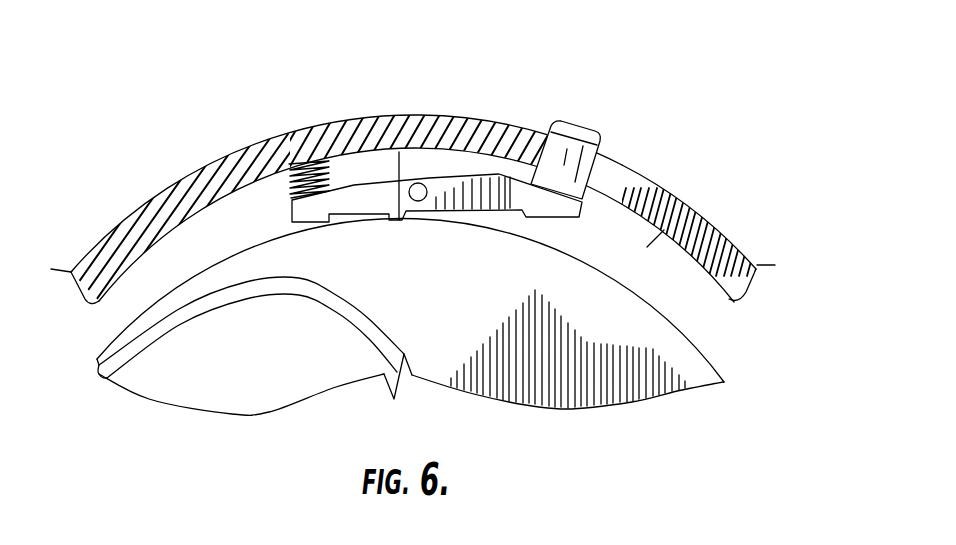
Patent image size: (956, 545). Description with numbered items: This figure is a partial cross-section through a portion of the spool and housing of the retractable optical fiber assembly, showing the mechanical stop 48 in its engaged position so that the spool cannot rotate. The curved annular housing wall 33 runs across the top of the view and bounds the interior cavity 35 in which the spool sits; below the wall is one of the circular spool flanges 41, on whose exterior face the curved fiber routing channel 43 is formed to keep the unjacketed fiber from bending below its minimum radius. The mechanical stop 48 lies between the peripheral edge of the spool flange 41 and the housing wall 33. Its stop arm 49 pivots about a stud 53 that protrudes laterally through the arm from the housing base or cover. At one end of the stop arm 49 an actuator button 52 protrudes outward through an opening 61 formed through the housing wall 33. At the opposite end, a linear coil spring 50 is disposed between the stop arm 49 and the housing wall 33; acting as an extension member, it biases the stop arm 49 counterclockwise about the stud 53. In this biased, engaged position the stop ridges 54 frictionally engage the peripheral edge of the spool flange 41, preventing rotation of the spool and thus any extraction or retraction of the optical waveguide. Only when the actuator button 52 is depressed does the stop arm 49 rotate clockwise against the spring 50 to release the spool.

The housing wall 33 is at (120, 218).
The interior cavity 35 is at (692, 205).
The spool flange 41 is at (688, 352).
The fiber routing channel 43 is at (255, 287).
The mechanical stop 48 is at (359, 190).
The stop arm 49 is at (478, 207).
The linear coil spring 50 is at (272, 194).
The actuator button 52 is at (578, 121).
The stud 53 is at (420, 181).
The stop ridges 54 is at (400, 160).
The opening 61 is at (612, 165).